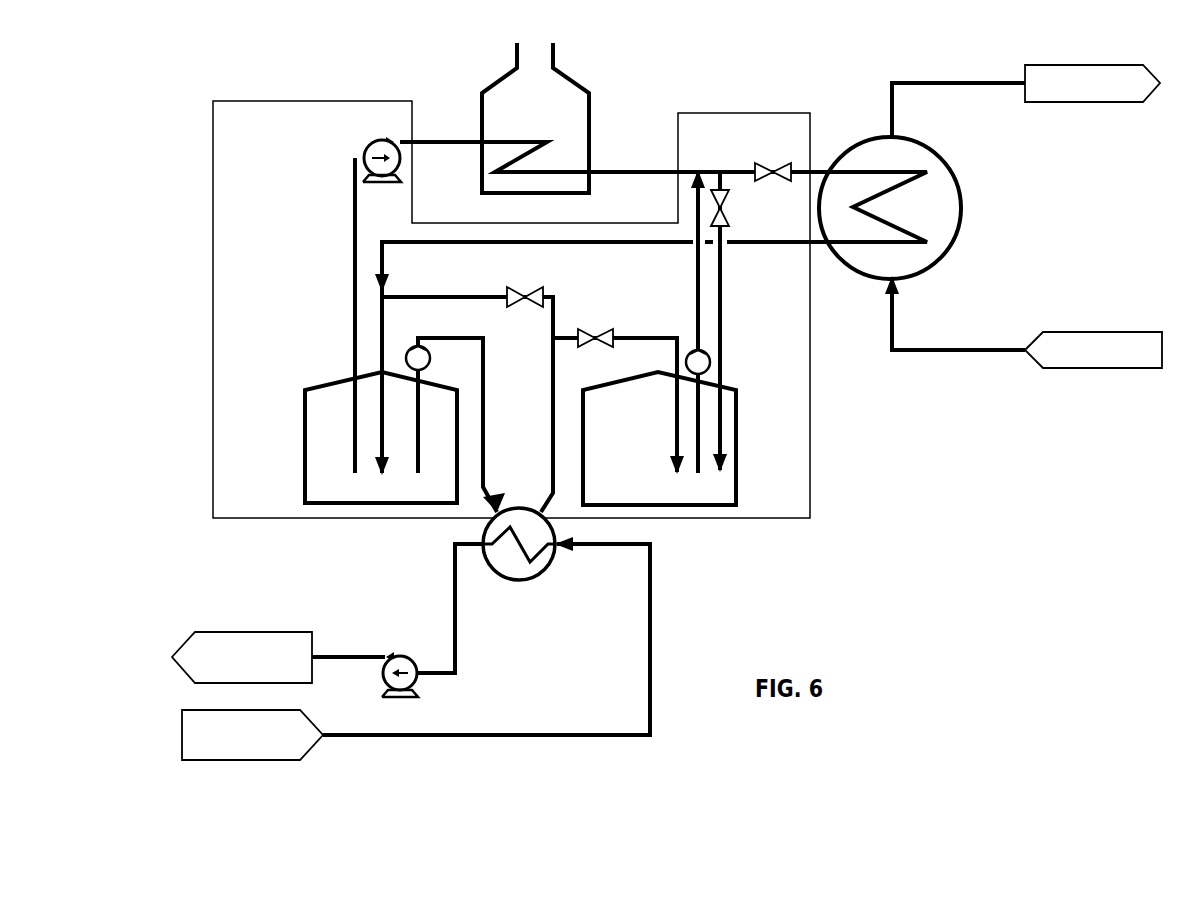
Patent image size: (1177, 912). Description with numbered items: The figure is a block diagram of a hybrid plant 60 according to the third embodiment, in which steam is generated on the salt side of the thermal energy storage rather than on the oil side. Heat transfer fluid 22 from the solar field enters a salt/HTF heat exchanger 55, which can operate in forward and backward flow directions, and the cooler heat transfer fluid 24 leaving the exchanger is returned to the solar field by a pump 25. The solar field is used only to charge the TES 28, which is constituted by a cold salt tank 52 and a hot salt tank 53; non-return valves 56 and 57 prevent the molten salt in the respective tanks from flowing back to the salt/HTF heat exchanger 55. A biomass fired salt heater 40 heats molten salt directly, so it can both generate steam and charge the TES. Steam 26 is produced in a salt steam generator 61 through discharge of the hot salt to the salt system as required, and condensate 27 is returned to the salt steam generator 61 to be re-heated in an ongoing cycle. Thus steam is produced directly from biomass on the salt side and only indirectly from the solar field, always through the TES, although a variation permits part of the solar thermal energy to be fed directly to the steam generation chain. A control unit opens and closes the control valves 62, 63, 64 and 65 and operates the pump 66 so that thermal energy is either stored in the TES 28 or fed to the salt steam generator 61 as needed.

The heat transfer fluid 22 is at (275, 762).
The cooler heat transfer fluid 24 is at (248, 631).
The pump 25 is at (395, 656).
The steam 26 is at (1105, 104).
The condensate 27 is at (1105, 370).
The thermal energy storage 28 is at (812, 487).
The biomass fired salt heater 40 is at (590, 110).
The cold salt tank 52 is at (304, 467).
The hot salt tank 53 is at (737, 477).
The salt/HTF heat exchanger 55 is at (552, 556).
The non-return valve 56 is at (428, 352).
The non-return valve 57 is at (690, 348).
The hybrid plant 60 is at (883, 562).
The salt steam generator 61 is at (940, 258).
The control valve 62 is at (527, 288).
The control valve 63 is at (590, 328).
The control valve 64 is at (728, 200).
The control valve 65 is at (775, 163).
The pump 66 is at (366, 140).